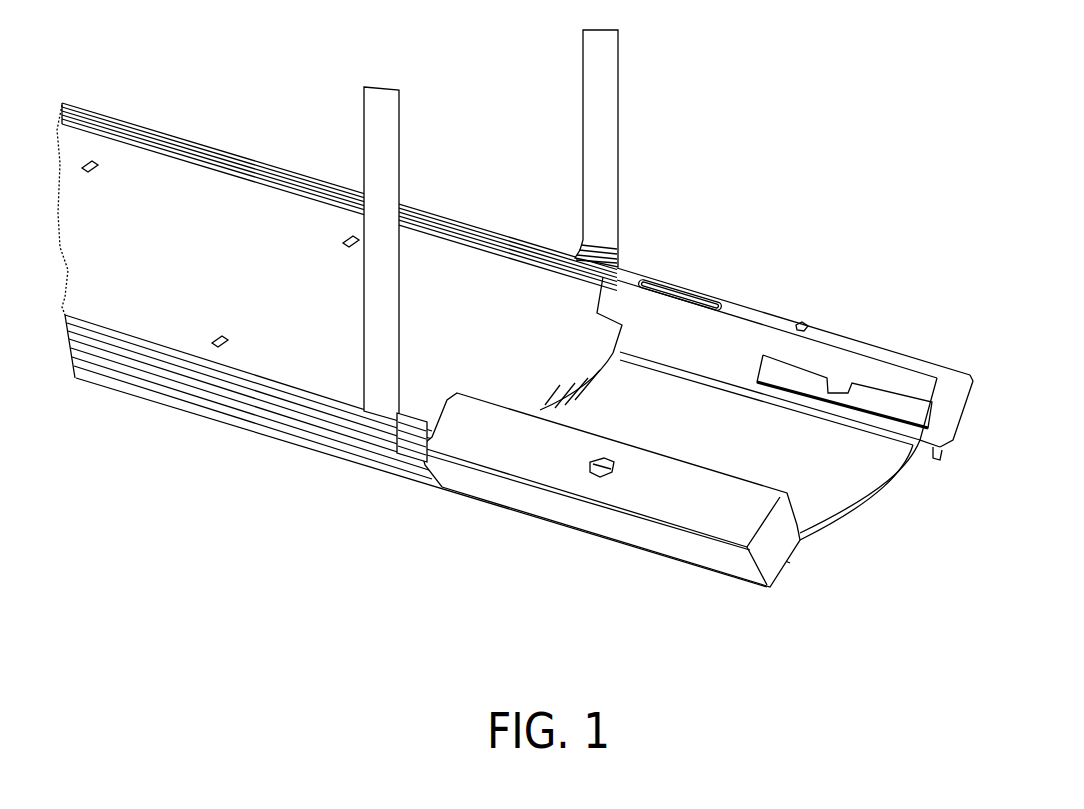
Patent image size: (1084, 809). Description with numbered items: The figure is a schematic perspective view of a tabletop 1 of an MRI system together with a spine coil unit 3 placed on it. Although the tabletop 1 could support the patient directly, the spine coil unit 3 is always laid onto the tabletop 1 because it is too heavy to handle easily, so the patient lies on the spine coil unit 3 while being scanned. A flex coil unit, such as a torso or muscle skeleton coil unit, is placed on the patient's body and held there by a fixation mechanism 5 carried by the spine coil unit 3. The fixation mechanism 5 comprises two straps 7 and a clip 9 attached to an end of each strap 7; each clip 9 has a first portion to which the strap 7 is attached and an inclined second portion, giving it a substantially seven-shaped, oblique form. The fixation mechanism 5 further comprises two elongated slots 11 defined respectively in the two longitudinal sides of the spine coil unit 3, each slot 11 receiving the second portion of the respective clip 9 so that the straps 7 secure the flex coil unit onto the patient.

The tabletop 1 is at (540, 483).
The spine coil unit 3 is at (417, 232).
The fixation mechanism 5 is at (638, 228).
The strap 7 is at (388, 125).
The clip 9 is at (618, 267).
The elongated slot 11 is at (414, 338).